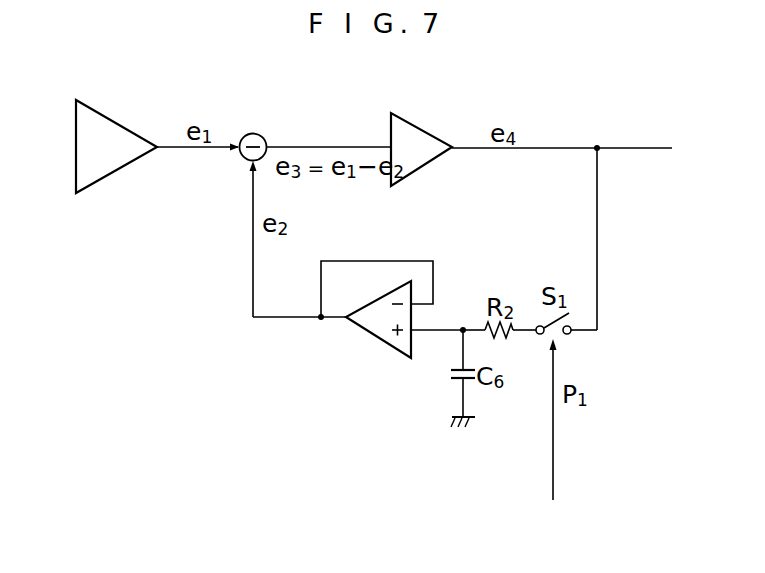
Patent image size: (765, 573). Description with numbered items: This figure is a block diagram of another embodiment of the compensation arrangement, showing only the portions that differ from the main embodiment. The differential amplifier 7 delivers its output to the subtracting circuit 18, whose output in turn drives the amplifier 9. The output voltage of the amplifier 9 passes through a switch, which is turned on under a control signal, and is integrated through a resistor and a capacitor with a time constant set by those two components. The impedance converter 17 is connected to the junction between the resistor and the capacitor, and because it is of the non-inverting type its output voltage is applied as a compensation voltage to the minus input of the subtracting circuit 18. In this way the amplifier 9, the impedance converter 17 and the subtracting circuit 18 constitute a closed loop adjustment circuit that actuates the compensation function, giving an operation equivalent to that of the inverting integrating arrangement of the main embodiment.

The differential amplifier 7 is at (108, 118).
The subtracting circuit 18 is at (252, 133).
The amplifier 9 is at (410, 123).
The impedance converter 17 is at (362, 329).